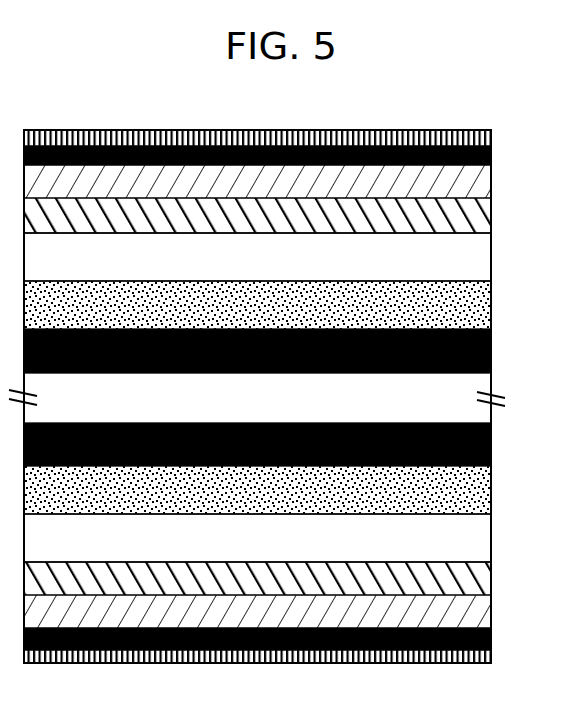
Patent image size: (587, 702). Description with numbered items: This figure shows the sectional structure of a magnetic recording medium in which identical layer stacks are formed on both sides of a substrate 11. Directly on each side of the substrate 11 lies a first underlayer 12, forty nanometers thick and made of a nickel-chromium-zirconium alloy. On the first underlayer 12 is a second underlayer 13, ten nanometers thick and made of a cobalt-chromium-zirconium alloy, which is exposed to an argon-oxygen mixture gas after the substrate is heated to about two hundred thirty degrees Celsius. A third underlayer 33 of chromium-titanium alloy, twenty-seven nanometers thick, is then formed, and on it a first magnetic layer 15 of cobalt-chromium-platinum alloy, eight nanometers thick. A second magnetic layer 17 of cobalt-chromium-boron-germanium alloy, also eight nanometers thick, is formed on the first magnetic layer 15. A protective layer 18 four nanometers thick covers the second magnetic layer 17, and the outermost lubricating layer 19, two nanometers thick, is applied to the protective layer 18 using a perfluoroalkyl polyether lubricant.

The substrate 11 is at (489, 415).
The first underlayer 12 is at (489, 350).
The second underlayer 13 is at (489, 303).
The third underlayer 33 is at (489, 258).
The first magnetic layer 15 is at (489, 217).
The second magnetic layer 17 is at (489, 187).
The protective layer 18 is at (489, 158).
The lubricating layer 19 is at (489, 133).